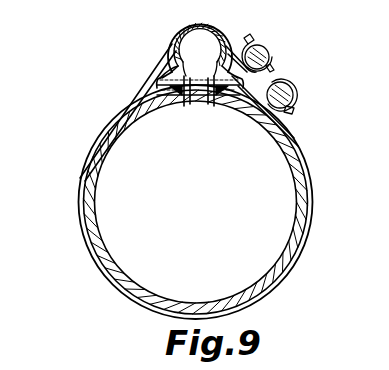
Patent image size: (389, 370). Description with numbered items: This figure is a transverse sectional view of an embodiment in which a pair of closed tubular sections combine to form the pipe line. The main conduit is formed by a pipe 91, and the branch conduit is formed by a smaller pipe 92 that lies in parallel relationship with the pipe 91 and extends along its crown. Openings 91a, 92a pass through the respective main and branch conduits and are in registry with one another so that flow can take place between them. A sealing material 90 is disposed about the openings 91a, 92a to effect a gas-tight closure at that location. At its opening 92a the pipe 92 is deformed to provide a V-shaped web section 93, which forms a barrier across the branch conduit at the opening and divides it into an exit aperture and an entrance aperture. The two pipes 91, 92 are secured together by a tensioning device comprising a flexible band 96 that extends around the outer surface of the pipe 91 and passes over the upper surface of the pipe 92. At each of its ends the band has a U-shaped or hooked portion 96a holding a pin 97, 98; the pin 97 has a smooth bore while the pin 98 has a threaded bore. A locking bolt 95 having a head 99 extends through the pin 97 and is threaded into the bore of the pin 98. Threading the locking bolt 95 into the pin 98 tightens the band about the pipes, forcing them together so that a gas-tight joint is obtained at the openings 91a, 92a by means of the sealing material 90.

The sealing material 90 is at (176, 92).
The pipe 91 is at (92, 222).
The opening 91a is at (190, 106).
The smaller pipe 92 is at (174, 46).
The opening 92a is at (202, 61).
The V-shaped web section 93 is at (165, 70).
The locking bolt 95 is at (276, 72).
The flexible band 96 is at (81, 173).
The hooked portion 96a is at (271, 58).
The pin 97 is at (296, 94).
The pin 98 is at (256, 44).
The head 99 is at (294, 110).